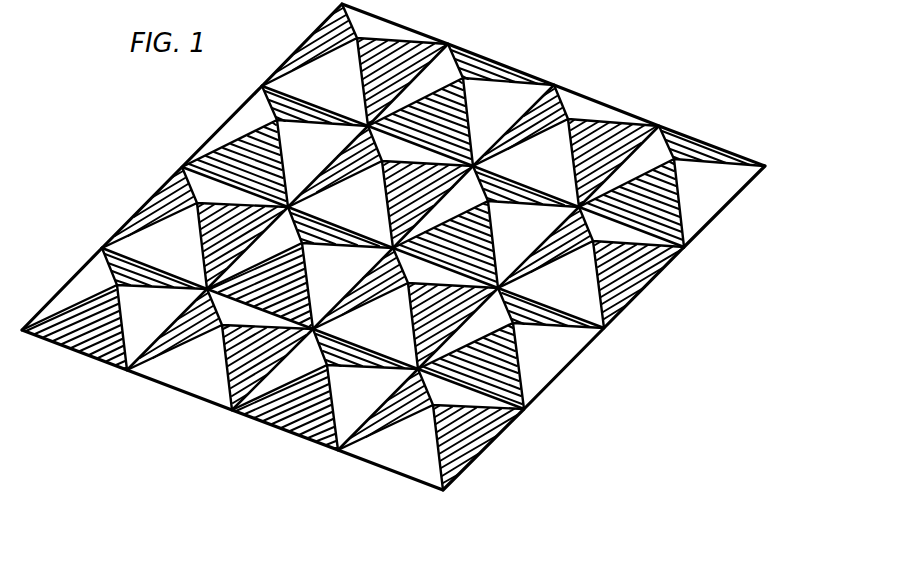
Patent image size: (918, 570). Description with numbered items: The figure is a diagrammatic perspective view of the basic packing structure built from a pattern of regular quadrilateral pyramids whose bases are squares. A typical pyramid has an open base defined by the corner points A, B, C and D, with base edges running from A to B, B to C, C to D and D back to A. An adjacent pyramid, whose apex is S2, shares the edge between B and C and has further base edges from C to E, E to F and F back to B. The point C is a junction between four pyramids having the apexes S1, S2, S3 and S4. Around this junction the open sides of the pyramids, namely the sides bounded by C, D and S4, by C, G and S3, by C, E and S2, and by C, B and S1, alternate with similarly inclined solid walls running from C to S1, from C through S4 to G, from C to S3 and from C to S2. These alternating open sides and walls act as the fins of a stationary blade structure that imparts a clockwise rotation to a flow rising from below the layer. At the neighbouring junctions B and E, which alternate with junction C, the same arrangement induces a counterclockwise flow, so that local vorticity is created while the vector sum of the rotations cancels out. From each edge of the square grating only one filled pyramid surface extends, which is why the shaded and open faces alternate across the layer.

The base corner point A is at (474, 163).
The base corner point B is at (396, 251).
The junction point C is at (288, 204).
The base corner point D is at (366, 111).
The base corner point E is at (203, 289).
The base corner point F is at (310, 333).
The base corner point G is at (142, 178).
The pyramid apex S1 is at (379, 164).
The pyramid apex S2 is at (303, 246).
The pyramid apex S3 is at (196, 205).
The pyramid apex S4 is at (284, 125).